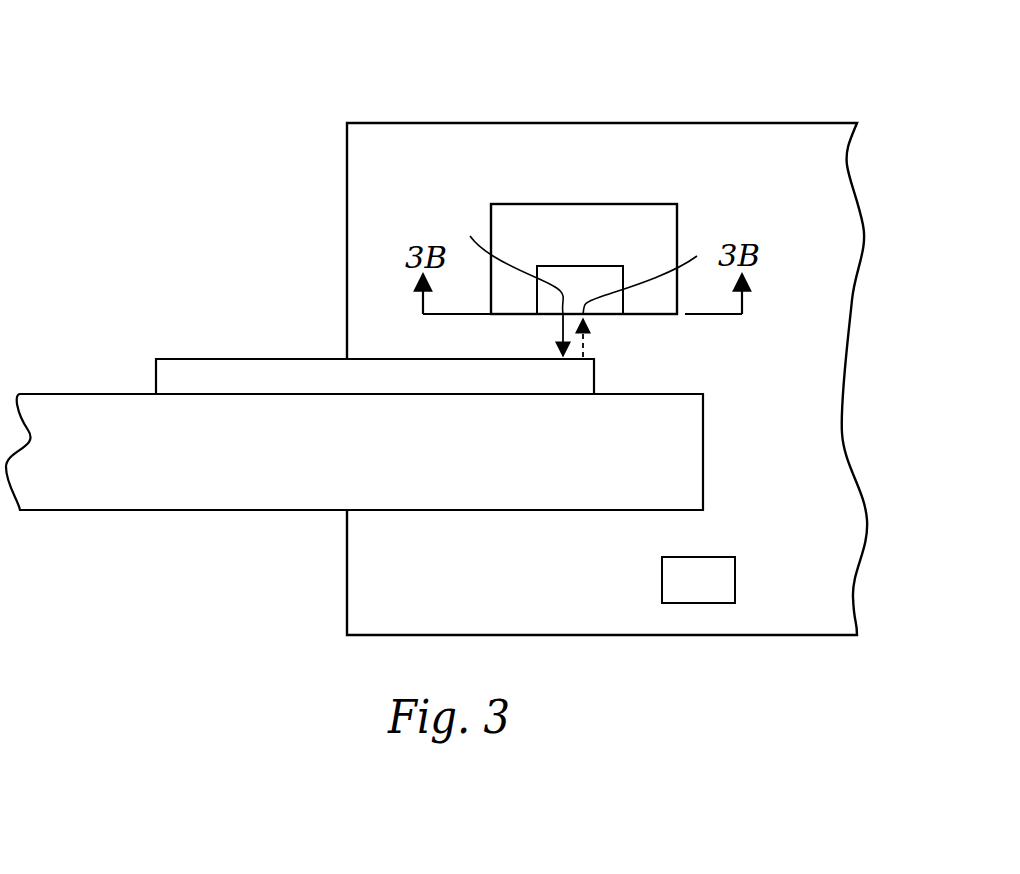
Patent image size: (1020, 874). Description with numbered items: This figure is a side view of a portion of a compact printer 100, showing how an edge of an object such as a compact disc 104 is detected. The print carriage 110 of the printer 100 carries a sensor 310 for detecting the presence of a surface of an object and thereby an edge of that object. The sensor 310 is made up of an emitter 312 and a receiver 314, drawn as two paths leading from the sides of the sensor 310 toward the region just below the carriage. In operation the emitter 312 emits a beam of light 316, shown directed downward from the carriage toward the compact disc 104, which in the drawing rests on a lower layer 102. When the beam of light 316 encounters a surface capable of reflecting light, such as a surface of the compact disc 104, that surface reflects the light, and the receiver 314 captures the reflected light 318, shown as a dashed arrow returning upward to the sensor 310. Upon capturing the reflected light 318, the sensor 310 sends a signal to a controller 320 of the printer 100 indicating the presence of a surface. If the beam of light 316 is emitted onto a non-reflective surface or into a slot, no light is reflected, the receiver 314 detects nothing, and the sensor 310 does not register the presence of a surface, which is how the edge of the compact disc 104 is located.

The printer 100 is at (613, 98).
The first layer 102 is at (323, 461).
The compact disc 104 is at (323, 391).
The print carriage 110 is at (598, 242).
The sensor 310 is at (595, 292).
The emitter 312 is at (505, 262).
The receiver 314 is at (651, 271).
The beam of light 316 is at (562, 337).
The reflected light 318 is at (586, 350).
The controller 320 is at (715, 593).